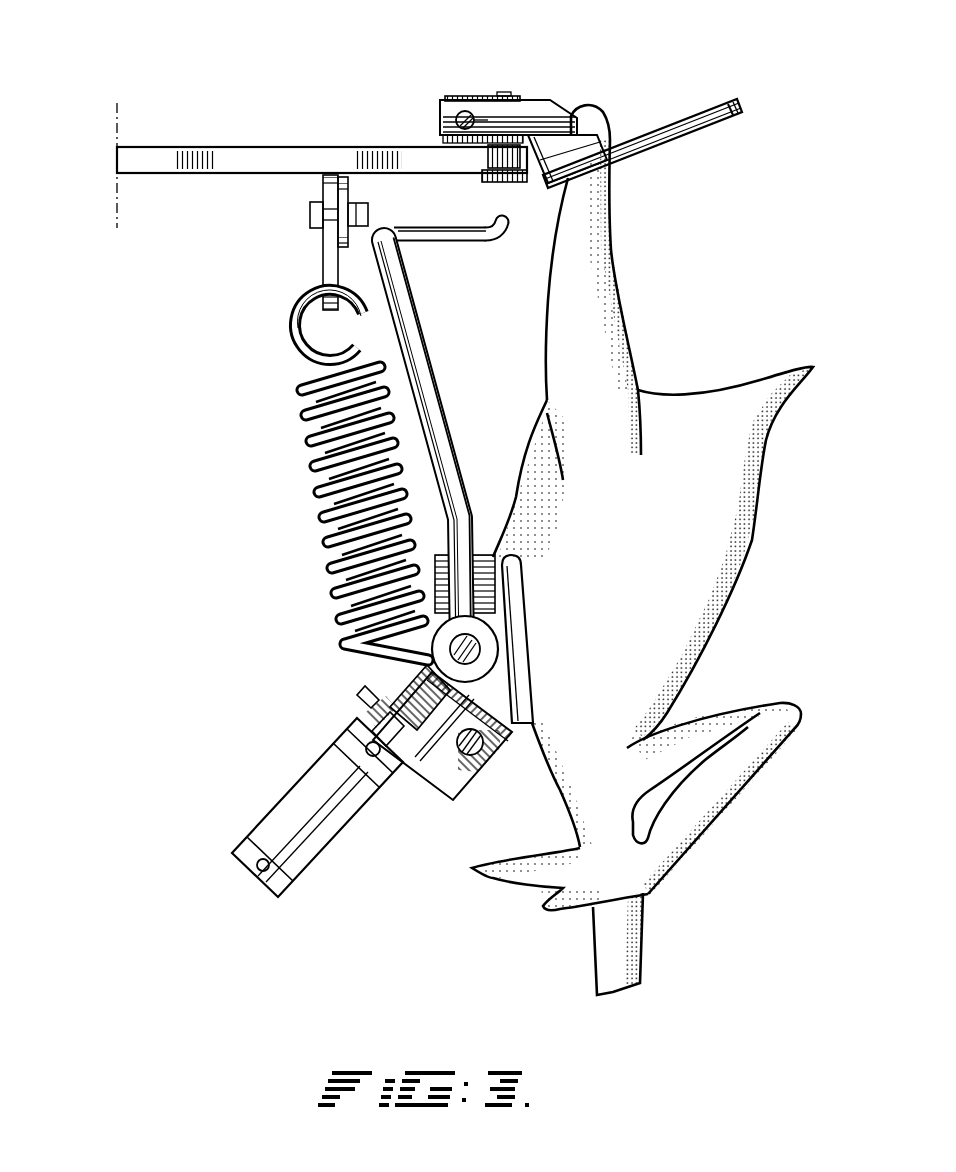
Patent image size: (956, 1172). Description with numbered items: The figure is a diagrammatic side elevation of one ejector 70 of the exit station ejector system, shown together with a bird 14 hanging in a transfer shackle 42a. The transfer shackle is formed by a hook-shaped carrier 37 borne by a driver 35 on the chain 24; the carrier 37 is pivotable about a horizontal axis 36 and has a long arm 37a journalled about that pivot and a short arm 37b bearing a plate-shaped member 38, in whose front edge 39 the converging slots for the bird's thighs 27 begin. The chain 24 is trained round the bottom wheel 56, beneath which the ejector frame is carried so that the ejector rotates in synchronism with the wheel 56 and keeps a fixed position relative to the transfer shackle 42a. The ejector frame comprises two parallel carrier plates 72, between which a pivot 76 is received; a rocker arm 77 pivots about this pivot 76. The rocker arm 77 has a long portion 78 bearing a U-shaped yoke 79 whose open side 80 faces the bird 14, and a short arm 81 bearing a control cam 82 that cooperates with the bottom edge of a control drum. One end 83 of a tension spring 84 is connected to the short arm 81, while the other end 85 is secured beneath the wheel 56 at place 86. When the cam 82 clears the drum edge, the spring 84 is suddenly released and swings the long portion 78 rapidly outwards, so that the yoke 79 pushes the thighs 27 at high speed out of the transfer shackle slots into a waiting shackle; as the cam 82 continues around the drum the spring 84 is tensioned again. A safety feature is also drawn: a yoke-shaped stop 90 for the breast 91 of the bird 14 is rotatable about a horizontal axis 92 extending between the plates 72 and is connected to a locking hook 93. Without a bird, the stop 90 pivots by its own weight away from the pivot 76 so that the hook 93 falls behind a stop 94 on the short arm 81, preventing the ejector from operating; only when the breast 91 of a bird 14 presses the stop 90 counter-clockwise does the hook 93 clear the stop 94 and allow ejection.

The bird 14 is at (716, 590).
The chain 24 is at (499, 181).
The thighs 27 is at (611, 205).
The driver 35 is at (470, 95).
The horizontal axis 36 is at (446, 123).
The carrier 37 is at (498, 105).
The long arm 37a is at (510, 115).
The short arm 37b is at (545, 138).
The member 38 is at (696, 130).
The front edge 39 is at (740, 104).
The transfer shackle 42a is at (665, 137).
The bottom wheel 56 is at (264, 165).
The ejector 70 is at (377, 757).
The carrier plates 72 is at (482, 555).
The pivot 76 is at (481, 648).
The rocker arm 77 is at (479, 460).
The long portion 78 is at (432, 395).
The U-shaped yoke 79 is at (460, 257).
The open side 80 is at (500, 240).
The short arm 81 is at (407, 685).
The control cam 82 is at (330, 852).
The end of tension spring 83 is at (362, 697).
The tension spring 84 is at (330, 520).
The other end of tension spring 85 is at (296, 343).
The place 86 is at (308, 232).
The stop 90 is at (541, 639).
The breast 91 is at (553, 621).
The horizontal axis 92 is at (480, 754).
The locking hook 93 is at (392, 777).
The stop 94 is at (420, 767).